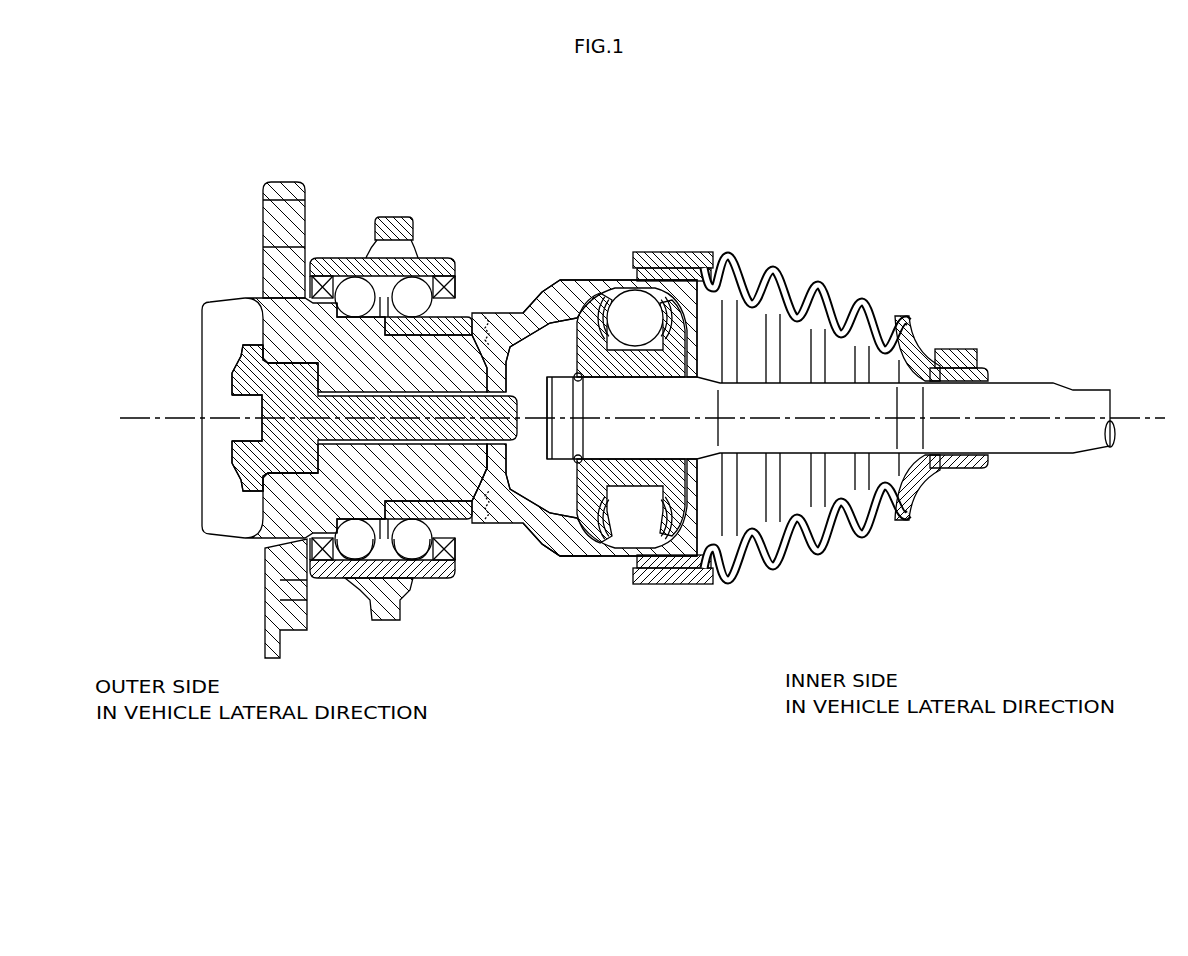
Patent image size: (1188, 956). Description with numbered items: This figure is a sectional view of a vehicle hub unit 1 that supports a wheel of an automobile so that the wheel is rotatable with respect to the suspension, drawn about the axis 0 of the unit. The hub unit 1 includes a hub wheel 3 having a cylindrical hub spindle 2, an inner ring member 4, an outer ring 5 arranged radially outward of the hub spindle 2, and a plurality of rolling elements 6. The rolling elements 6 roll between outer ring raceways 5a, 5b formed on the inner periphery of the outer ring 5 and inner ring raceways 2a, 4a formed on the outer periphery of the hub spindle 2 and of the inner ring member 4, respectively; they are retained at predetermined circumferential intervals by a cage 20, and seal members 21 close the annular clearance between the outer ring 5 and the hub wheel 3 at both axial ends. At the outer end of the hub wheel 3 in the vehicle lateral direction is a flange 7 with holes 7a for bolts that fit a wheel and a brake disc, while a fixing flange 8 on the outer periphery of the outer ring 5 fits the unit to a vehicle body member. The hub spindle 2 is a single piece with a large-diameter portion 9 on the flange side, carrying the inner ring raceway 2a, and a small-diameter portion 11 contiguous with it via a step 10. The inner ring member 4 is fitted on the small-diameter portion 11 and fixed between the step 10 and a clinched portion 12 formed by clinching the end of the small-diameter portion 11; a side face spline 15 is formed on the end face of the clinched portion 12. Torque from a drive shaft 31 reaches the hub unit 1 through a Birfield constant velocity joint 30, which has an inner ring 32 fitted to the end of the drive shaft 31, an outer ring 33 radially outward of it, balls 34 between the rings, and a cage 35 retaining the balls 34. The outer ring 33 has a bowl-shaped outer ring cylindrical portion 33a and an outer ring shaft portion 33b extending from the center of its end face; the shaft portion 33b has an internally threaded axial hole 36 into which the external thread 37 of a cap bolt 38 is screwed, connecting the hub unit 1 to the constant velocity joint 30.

The axis 0 is at (1143, 413).
The vehicle hub unit 1 is at (463, 200).
The hub spindle 2 is at (337, 340).
The inner ring raceway 2a is at (257, 290).
The hub wheel 3 is at (253, 283).
The inner ring member 4 is at (492, 318).
The inner ring raceway 4a is at (465, 308).
The outer ring 5 is at (342, 258).
The outer ring raceway 5a is at (343, 280).
The outer ring raceway 5b is at (415, 280).
The rolling elements 6 is at (363, 280).
The flange 7 is at (267, 185).
The holes 7a is at (280, 220).
The fixing flange 8 is at (415, 217).
The large-diameter portion 9 is at (278, 352).
The step 10 is at (263, 397).
The small-diameter portion 11 is at (507, 313).
The clinched portion 12 is at (513, 340).
The side face spline 15 is at (489, 533).
The cage 20 is at (355, 545).
The seal members 21 is at (313, 547).
The constant velocity joint 30 is at (607, 253).
The drive shaft 31 is at (1020, 395).
The inner ring 32 is at (620, 497).
The outer ring 33 is at (548, 560).
The outer ring cylindrical portion 33a is at (573, 557).
The outer ring shaft portion 33b is at (460, 455).
The balls 34 is at (640, 305).
The cage 35 is at (687, 263).
The hole 36 is at (505, 405).
The external thread 37 is at (267, 500).
The cap bolt 38 is at (266, 442).